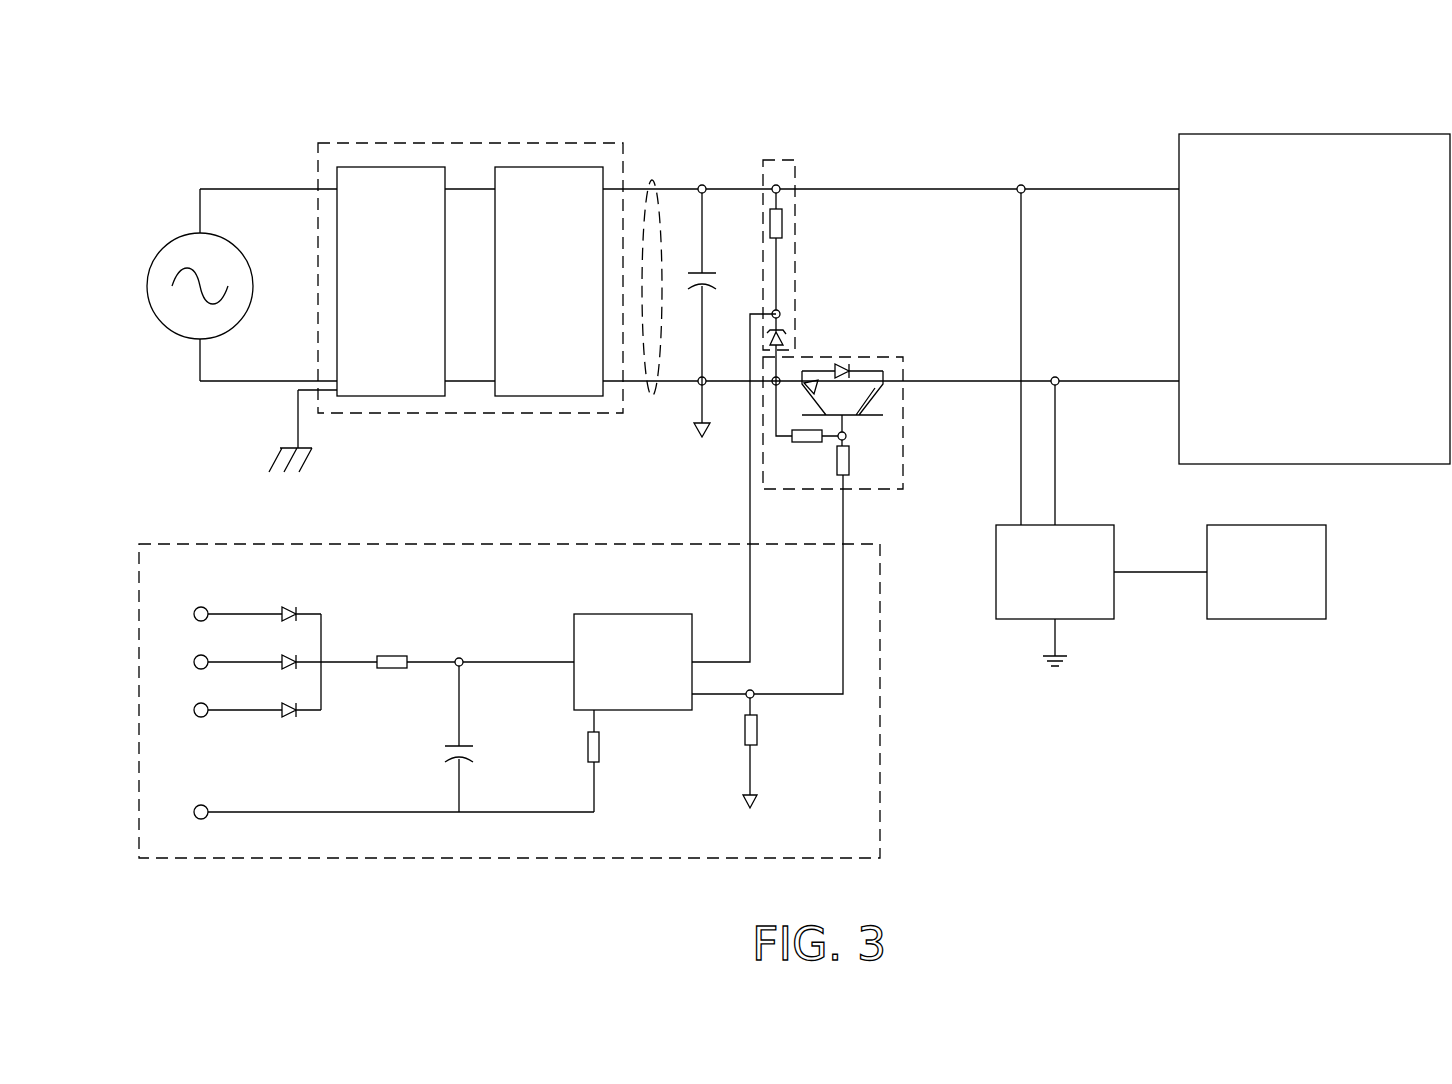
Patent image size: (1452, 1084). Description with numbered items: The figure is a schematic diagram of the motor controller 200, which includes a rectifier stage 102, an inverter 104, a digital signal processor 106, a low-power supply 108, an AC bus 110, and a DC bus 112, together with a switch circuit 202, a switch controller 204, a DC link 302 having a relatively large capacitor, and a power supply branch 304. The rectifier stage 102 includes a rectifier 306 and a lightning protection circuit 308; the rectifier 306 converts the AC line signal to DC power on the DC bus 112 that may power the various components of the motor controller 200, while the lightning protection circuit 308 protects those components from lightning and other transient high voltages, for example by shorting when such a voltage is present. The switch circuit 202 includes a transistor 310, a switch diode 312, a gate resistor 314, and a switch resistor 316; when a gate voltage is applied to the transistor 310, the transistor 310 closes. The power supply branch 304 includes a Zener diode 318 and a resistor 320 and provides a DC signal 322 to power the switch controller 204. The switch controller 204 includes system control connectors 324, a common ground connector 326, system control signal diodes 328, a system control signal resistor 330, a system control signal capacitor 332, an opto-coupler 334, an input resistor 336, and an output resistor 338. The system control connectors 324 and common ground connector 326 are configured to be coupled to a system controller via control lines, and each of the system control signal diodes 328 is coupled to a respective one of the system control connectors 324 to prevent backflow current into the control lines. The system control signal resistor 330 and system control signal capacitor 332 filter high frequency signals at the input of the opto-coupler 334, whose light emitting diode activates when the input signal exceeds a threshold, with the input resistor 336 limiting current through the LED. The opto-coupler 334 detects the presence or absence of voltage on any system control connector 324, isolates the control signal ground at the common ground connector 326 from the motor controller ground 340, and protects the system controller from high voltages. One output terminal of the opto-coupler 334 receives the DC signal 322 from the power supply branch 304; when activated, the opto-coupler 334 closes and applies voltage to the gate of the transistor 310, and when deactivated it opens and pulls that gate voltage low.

The motor controller 200 is at (1345, 108).
The rectifier stage 102 is at (470, 140).
The inverter 104 is at (1314, 299).
The digital signal processor 106 is at (1220, 572).
The low-power supply 108 is at (1055, 595).
The alternating current bus 110 is at (162, 333).
The direct current bus 112 is at (655, 180).
The switch circuit 202 is at (902, 354).
The switch controller 204 is at (562, 540).
The DC link 302 is at (712, 269).
The power supply branch 304 is at (768, 158).
The rectifier 306 is at (549, 281).
The lightning protection circuit 308 is at (391, 281).
The transistor 310 is at (845, 413).
The switch diode 312 is at (840, 364).
The gate resistor 314 is at (850, 460).
The switch resistor 316 is at (807, 447).
The Zener diode 318 is at (783, 332).
The resistor 320 is at (783, 224).
The DC signal 322 is at (750, 636).
The system control connectors 324 is at (217, 593).
The common ground connector 326 is at (204, 805).
The system control signal diodes 328 is at (315, 594).
The system control signal resistor 330 is at (392, 653).
The system control signal capacitor 332 is at (455, 745).
The opto-coupler 334 is at (664, 662).
The input resistor 336 is at (600, 746).
The output resistor 338 is at (757, 728).
The motor controller ground 340 is at (754, 801).